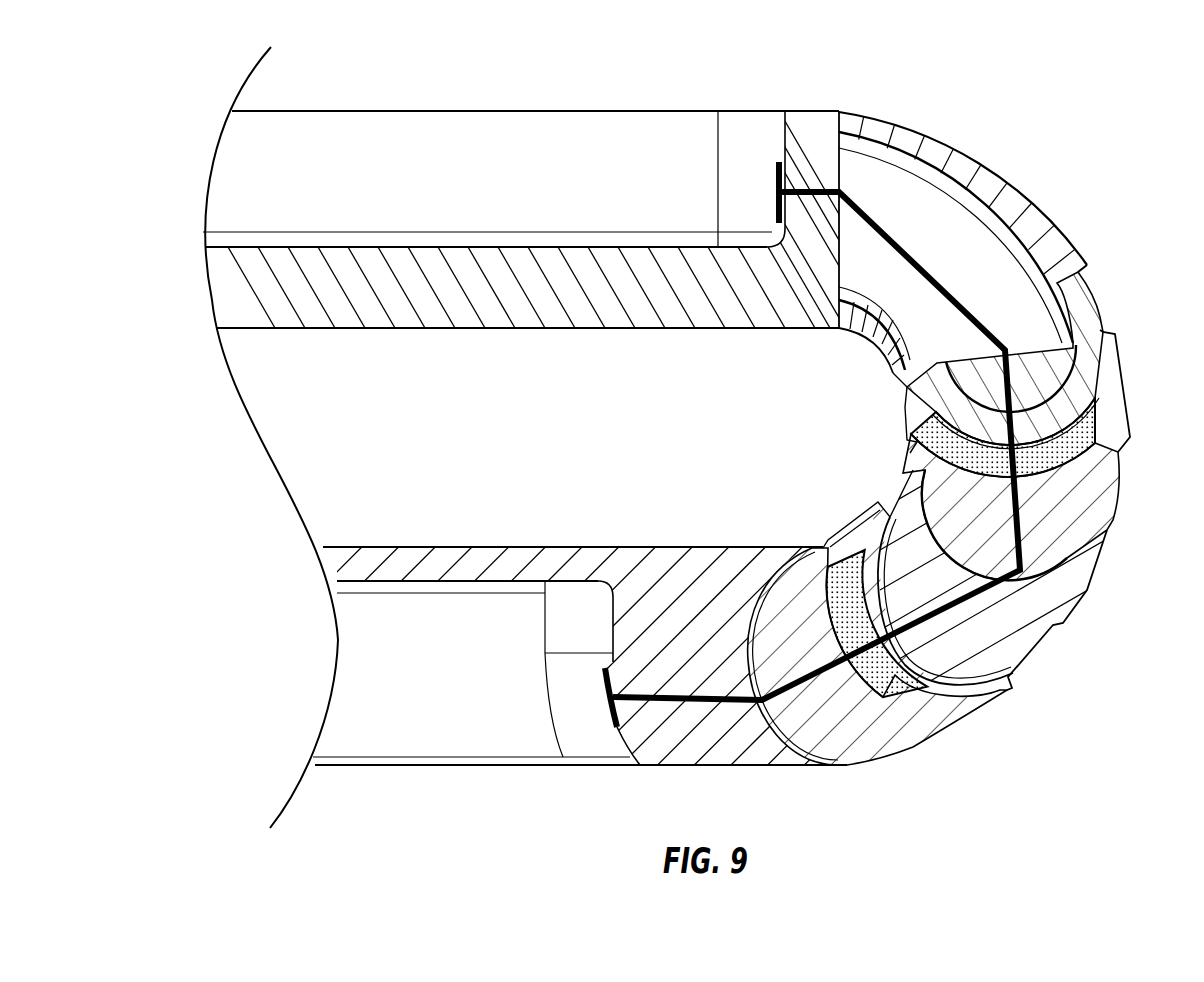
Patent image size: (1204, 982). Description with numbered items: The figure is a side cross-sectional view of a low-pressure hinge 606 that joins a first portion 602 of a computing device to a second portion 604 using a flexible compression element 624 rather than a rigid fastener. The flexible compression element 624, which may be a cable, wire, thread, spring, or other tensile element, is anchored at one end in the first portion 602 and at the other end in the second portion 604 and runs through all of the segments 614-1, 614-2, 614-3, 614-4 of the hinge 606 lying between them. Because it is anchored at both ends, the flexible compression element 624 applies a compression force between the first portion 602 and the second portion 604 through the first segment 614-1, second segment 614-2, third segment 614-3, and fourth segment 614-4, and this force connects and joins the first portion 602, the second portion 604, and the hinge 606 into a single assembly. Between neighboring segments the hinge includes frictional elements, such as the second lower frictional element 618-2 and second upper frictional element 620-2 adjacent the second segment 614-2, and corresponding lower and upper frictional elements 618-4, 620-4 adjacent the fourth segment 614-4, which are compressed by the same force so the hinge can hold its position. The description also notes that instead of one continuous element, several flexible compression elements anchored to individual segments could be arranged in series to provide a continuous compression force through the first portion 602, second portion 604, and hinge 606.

The first portion 602 is at (813, 145).
The second portion 604 is at (475, 730).
The hinge 606 is at (1113, 110).
The first segment 614-1 is at (855, 740).
The second segment 614-2 is at (1072, 596).
The third segment 614-3 is at (1100, 500).
The fourth segment 614-4 is at (1090, 322).
The second lower frictional element 618-2 is at (935, 697).
The fourth lower frictional element 618-4 is at (1100, 450).
The second upper frictional element 620-2 is at (965, 623).
The fourth upper frictional element 620-4 is at (1097, 393).
The flexible compression element 624 is at (697, 707).